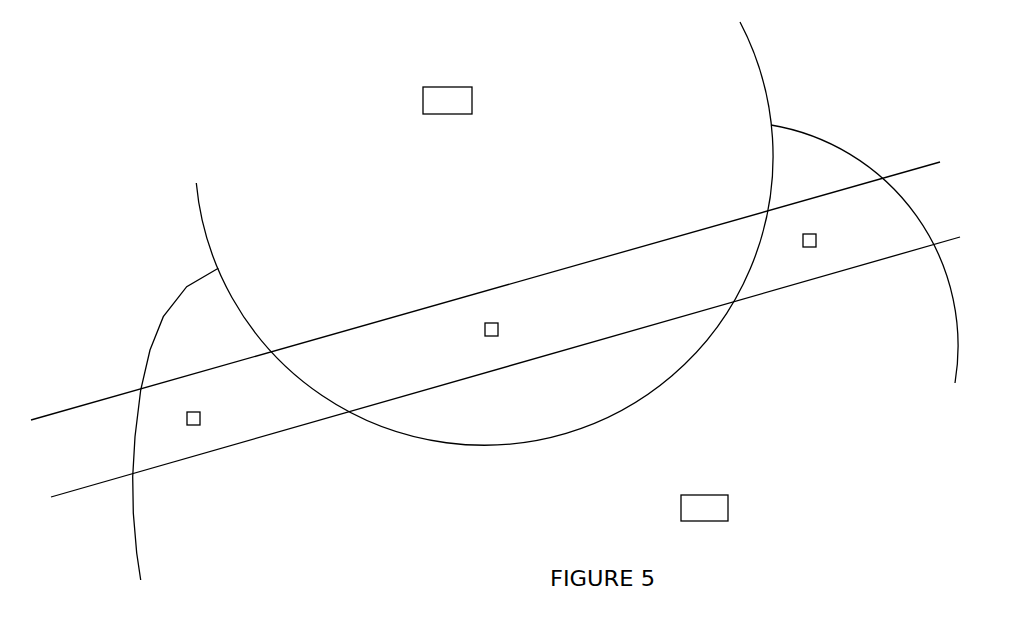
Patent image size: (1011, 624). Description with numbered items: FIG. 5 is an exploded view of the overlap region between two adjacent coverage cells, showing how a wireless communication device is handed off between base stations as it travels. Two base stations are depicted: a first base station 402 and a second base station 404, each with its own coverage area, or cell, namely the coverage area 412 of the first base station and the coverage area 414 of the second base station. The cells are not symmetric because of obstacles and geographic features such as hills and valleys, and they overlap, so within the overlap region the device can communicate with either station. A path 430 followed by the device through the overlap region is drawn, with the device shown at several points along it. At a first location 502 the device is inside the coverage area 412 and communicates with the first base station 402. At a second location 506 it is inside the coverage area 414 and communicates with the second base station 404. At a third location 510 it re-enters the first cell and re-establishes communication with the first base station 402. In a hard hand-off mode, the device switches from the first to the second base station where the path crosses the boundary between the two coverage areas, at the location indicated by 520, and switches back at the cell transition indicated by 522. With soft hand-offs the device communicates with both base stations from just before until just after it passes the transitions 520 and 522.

The first base station 402 is at (728, 495).
The second base station 404 is at (470, 88).
The coverage area of first cell 412 is at (957, 310).
The coverage area of second cell 414 is at (755, 52).
The path 430 is at (94, 522).
The first location 502 is at (201, 412).
The second location 506 is at (499, 323).
The third location 510 is at (816, 234).
The cell transition location 520 is at (888, 86).
The cell transition location 522 is at (753, 241).